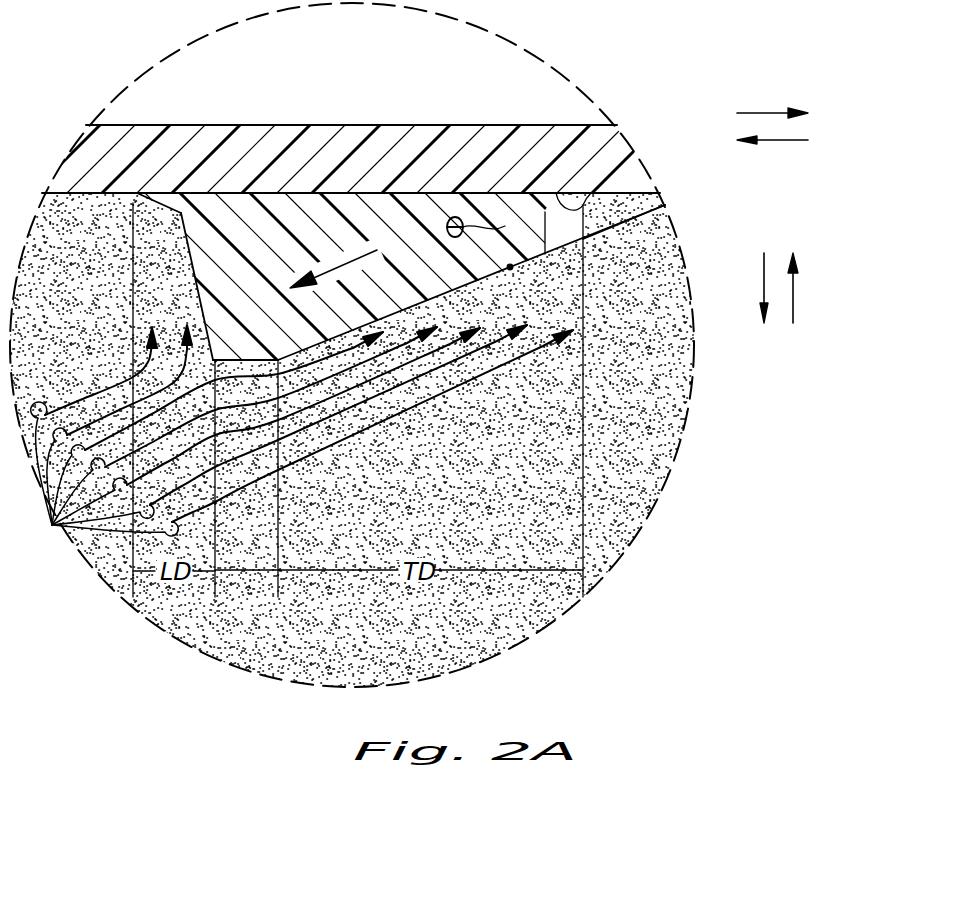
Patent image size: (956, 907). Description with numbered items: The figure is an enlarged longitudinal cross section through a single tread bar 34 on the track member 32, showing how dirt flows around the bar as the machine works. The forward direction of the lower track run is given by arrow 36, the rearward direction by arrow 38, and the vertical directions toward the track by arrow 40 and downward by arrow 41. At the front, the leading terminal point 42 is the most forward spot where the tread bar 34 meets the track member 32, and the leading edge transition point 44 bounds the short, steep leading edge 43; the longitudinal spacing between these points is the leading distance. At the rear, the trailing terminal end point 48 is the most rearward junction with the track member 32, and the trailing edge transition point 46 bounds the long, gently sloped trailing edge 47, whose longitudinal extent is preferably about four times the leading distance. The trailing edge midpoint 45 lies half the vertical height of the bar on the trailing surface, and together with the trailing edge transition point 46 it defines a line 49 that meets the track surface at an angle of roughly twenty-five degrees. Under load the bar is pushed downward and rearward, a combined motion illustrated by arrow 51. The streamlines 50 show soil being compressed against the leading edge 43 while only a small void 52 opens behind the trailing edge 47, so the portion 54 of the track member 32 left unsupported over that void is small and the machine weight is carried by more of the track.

The track member 32 is at (283, 127).
The tread bar 34 is at (112, 322).
The arrow indicating forward direction 36 is at (780, 141).
The arrow indicating rearward direction 38 is at (763, 113).
The arrow indicating direction toward track member 40 is at (793, 292).
The arrow indicating downward direction 41 is at (764, 292).
The leading terminal point 42 is at (133, 194).
The leading edge 43 is at (185, 262).
The leading edge transition point 44 is at (197, 313).
The trailing edge midpoint 45 is at (510, 267).
The trailing edge transition point 46 is at (281, 358).
The trailing edge 47 is at (424, 306).
The trailing terminal end point 48 is at (596, 207).
The line 49 is at (662, 208).
The streamlines 50 is at (295, 439).
The arrow illustrating combined motion 51 is at (334, 256).
The void 52 is at (634, 194).
The portion of track member supported by void 54 is at (606, 190).